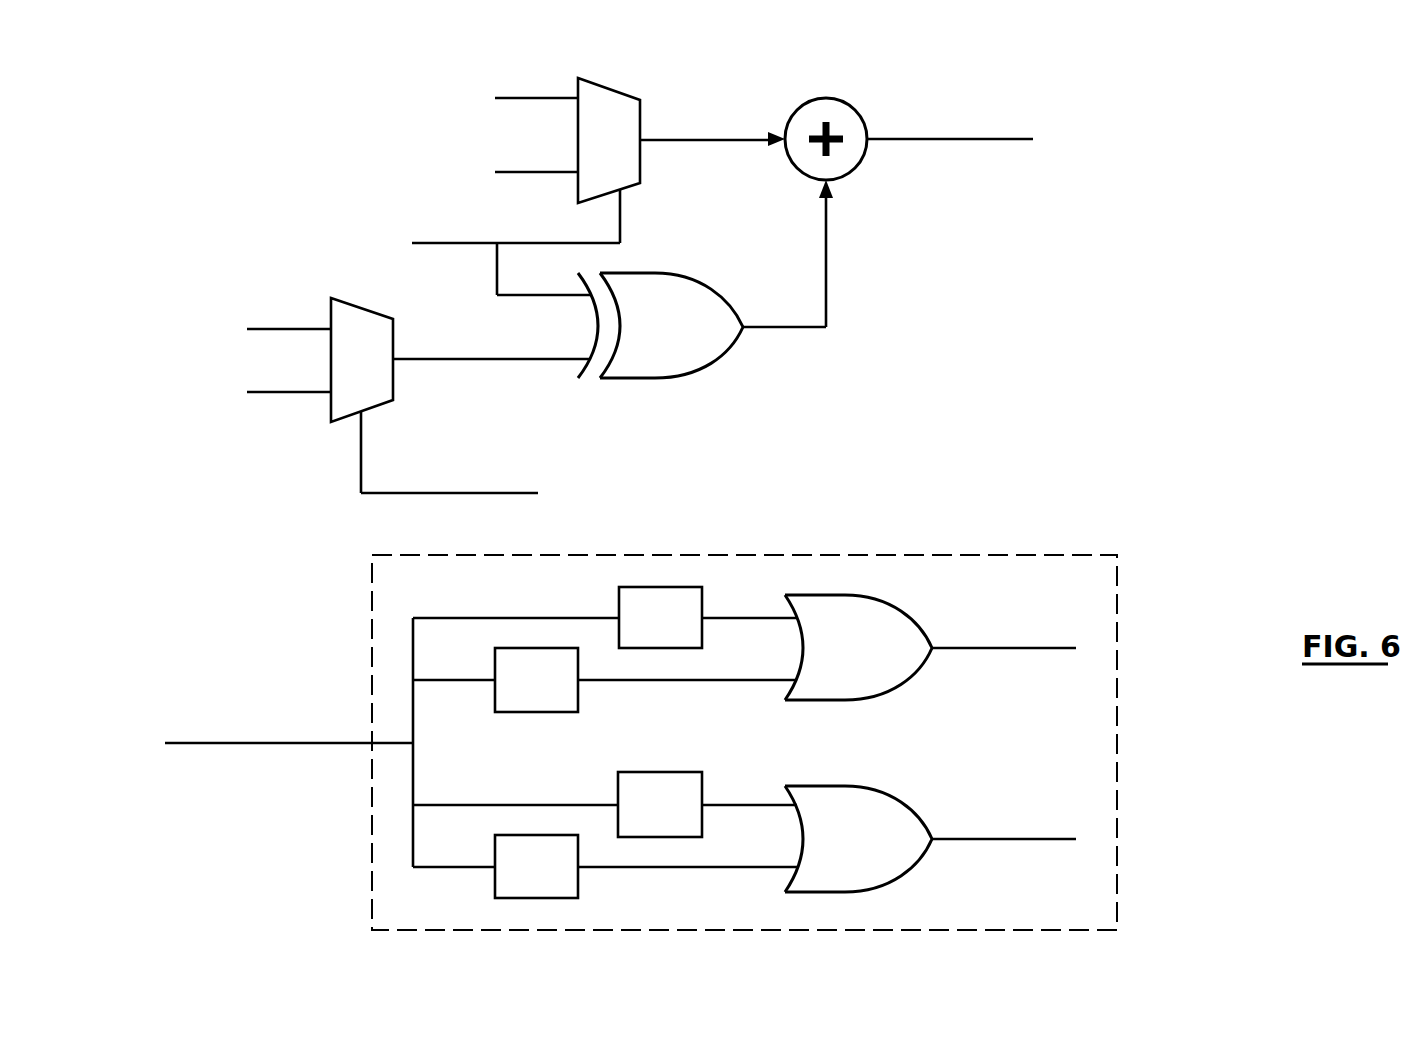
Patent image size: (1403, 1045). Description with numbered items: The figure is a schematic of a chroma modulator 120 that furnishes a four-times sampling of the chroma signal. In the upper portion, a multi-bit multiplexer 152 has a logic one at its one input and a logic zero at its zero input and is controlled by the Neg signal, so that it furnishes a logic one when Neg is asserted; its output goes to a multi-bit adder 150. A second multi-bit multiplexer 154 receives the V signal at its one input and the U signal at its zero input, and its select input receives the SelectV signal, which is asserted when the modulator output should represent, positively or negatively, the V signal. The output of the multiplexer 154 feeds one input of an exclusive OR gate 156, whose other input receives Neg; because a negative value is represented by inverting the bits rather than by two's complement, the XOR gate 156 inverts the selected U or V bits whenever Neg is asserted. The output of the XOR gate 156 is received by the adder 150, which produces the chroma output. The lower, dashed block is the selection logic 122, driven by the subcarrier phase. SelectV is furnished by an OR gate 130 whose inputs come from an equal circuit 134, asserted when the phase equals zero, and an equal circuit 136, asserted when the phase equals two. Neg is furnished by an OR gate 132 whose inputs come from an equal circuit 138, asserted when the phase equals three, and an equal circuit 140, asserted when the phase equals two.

The chroma modulator 120 is at (1168, 401).
The selection logic 122 is at (975, 554).
The OR gate 130 is at (915, 667).
The OR gate 132 is at (900, 804).
The equal circuit 134 is at (617, 593).
The equal circuit 136 is at (578, 703).
The equal circuit 138 is at (610, 783).
The equal circuit 140 is at (578, 887).
The multi-bit adder 150 is at (837, 97).
The multi-bit multiplexer 152 is at (618, 87).
The multi-bit multiplexer 154 is at (362, 305).
The exclusive OR gate 156 is at (662, 380).